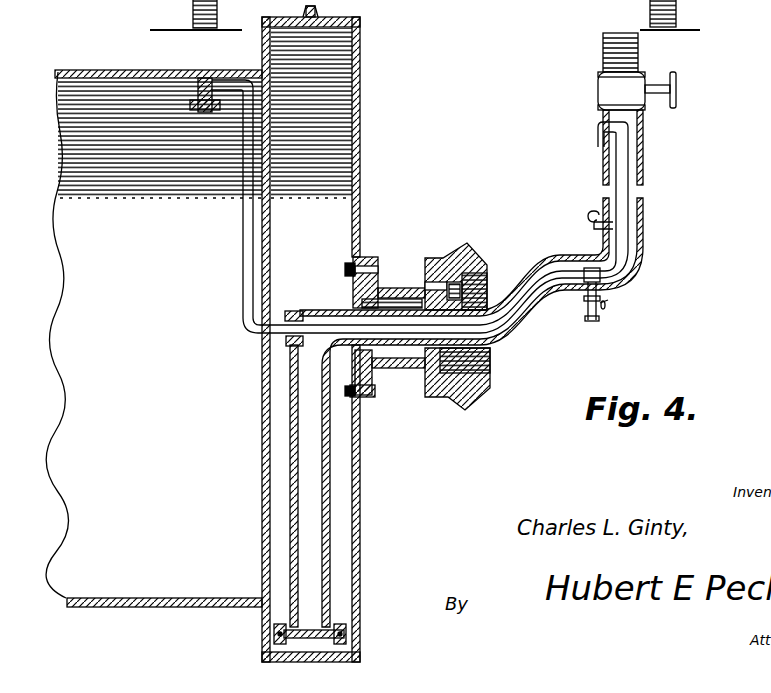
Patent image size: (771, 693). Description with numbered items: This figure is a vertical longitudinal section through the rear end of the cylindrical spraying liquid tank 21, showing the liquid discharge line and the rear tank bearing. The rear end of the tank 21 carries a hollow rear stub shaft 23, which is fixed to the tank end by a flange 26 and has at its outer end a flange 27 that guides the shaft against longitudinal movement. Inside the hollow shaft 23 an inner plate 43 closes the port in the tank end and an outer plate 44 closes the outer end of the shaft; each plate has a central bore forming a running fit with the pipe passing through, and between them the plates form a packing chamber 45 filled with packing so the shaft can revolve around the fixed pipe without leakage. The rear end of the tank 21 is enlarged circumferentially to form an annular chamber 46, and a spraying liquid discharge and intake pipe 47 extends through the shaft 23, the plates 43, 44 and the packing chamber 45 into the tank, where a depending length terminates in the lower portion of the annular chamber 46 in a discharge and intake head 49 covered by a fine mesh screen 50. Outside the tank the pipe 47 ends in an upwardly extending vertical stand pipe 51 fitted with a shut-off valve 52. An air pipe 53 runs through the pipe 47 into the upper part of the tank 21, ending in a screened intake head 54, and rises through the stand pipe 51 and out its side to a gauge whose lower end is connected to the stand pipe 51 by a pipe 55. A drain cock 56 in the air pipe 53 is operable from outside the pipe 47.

The spraying liquid tank 21 is at (137, 600).
The rear stub shaft 23 is at (410, 288).
The flange 26 is at (366, 393).
The flange 27 is at (435, 268).
The inner plate 43 is at (353, 283).
The outer plate 44 is at (490, 274).
The packing chamber 45 is at (378, 286).
The annular chamber 46 is at (345, 42).
The spraying liquid discharge and intake pipe 47 is at (456, 352).
The discharge and intake head 49 is at (345, 637).
The fine mesh screen 50 is at (305, 630).
The stand pipe 51 is at (643, 229).
The shut-off valve 52 is at (630, 87).
The air pipe 53 is at (253, 150).
The intake head 54 is at (212, 112).
The pipe 55 is at (598, 226).
The drain cock 56 is at (599, 316).